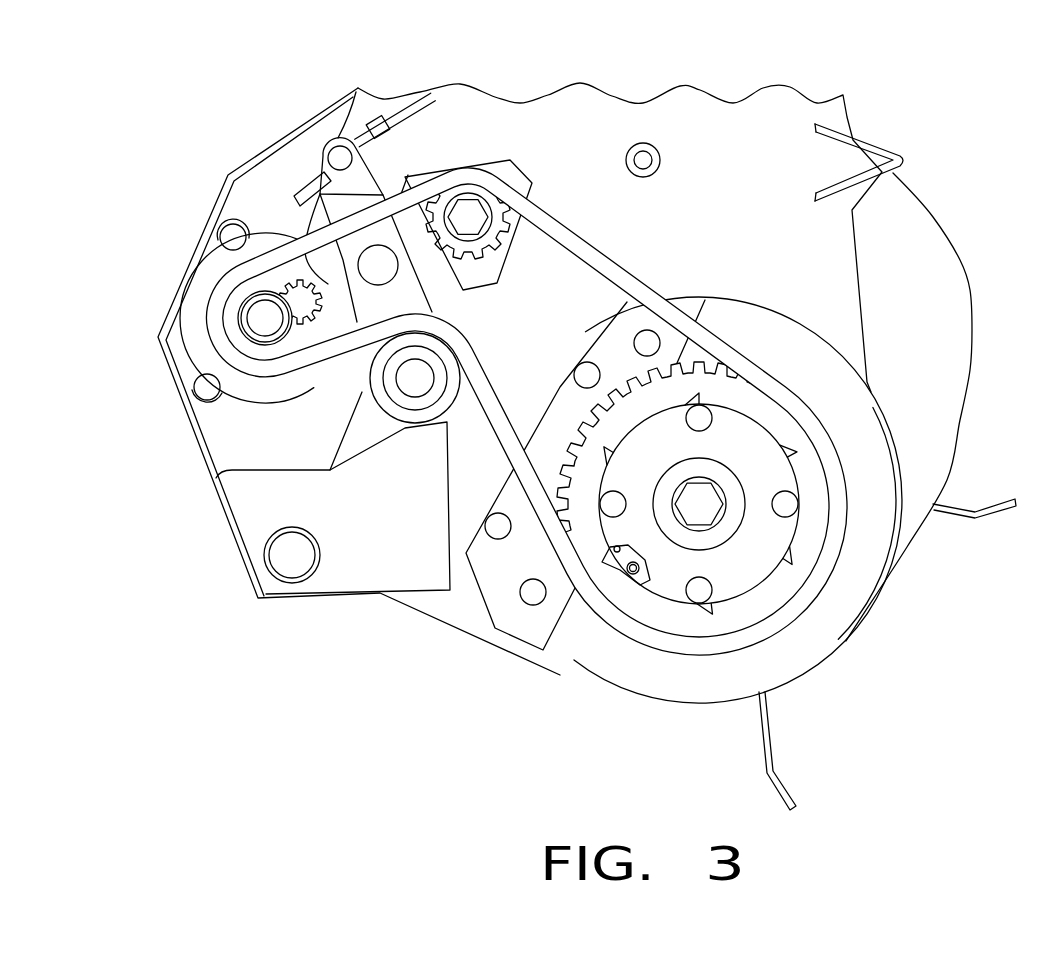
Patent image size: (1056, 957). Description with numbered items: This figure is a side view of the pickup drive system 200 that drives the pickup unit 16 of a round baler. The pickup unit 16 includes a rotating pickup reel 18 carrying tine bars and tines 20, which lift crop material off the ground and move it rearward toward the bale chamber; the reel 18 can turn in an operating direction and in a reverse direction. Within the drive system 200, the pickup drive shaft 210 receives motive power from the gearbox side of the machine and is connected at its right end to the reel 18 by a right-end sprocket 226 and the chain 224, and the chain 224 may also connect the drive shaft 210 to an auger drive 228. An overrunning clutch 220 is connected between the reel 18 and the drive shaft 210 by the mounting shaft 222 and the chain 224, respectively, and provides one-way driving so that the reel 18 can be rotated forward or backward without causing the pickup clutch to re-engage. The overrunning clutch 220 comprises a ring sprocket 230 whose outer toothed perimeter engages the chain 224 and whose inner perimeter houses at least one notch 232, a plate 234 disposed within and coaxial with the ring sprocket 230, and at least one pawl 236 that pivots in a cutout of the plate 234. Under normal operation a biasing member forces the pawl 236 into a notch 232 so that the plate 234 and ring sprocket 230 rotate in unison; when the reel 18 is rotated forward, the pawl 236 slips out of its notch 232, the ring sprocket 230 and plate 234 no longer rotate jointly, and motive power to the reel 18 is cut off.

The pickup unit 16 is at (880, 133).
The pickup reel 18 is at (878, 625).
The tines 20 is at (1005, 498).
The pickup drive system 200 is at (237, 600).
The pickup drive shaft 210 is at (266, 345).
The overrunning clutch 220 is at (763, 602).
The mounting shaft 222 is at (699, 509).
The chain 224 is at (557, 230).
The right-end sprocket 226 is at (311, 283).
The auger drive 228 is at (503, 246).
The ring sprocket 230 is at (566, 431).
The notch 232 is at (613, 461).
The plate 234 is at (675, 555).
The pawl 236 is at (615, 557).